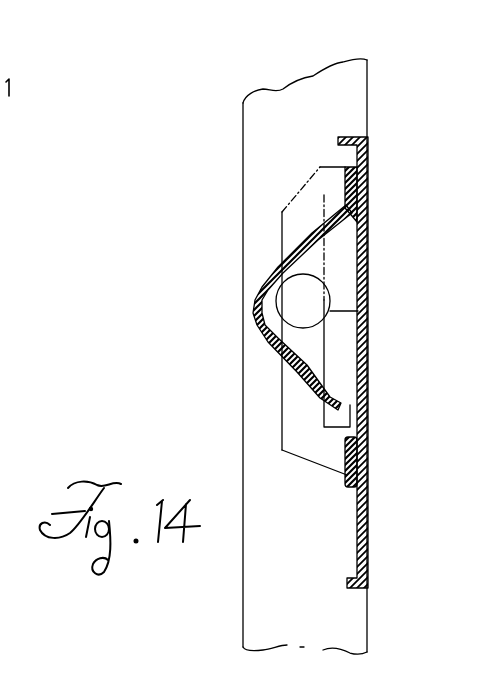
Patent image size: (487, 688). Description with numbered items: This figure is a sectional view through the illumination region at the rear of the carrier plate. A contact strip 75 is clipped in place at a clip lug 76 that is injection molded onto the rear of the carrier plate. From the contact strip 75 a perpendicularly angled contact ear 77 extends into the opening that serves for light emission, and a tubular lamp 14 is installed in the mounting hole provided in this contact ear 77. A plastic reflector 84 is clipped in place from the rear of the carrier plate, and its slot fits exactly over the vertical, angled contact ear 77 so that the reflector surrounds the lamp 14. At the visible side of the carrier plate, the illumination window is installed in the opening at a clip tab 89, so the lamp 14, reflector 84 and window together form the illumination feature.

The tubular lamp 14 is at (368, 327).
The contact strip 75 is at (370, 177).
The clip lug 76 is at (346, 483).
The contact ear 77 is at (297, 406).
The plastic reflector 84 is at (256, 297).
The clip tab 89 is at (370, 280).